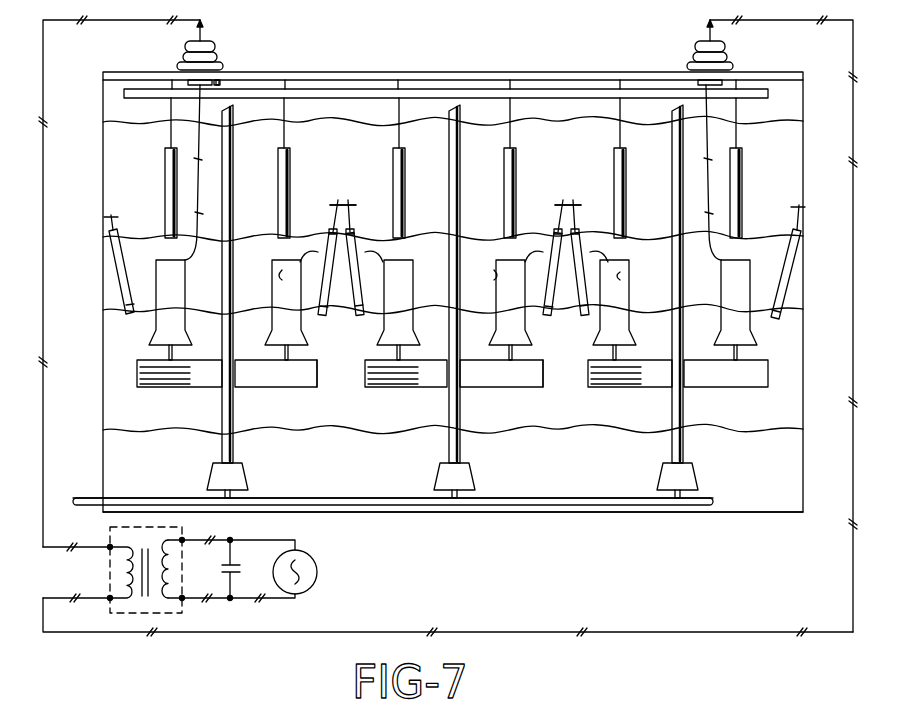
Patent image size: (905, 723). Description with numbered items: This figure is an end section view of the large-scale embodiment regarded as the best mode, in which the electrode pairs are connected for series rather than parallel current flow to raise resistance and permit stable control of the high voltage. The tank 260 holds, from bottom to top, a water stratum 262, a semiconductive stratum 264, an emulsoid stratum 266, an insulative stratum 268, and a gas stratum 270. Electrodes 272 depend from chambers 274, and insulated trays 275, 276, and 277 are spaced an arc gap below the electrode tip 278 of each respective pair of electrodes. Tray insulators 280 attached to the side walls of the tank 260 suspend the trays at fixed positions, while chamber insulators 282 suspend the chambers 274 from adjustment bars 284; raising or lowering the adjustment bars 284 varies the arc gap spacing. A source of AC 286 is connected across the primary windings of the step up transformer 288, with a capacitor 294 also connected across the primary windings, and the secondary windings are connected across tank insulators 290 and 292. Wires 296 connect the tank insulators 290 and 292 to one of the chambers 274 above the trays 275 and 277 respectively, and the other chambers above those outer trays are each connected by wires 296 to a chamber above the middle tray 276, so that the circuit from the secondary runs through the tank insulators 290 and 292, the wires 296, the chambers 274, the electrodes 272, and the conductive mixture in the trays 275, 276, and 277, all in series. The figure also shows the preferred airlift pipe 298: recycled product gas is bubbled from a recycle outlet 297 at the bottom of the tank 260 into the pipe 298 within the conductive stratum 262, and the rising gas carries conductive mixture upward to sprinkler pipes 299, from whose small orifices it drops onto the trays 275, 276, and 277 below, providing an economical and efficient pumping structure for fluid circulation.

The tank 260 is at (350, 72).
The water stratum 262 is at (114, 475).
The semiconductive stratum 264 is at (106, 403).
The emulsoid stratum 266 is at (106, 290).
The insulative stratum 268 is at (106, 167).
The gas stratum 270 is at (106, 97).
The electrodes 272 is at (143, 386).
The chambers 274 is at (283, 278).
The tray 275 is at (283, 386).
The tray 276 is at (508, 386).
The tray 277 is at (710, 373).
The electrode tip 278 is at (376, 388).
The tray insulators 280 is at (112, 234).
The chamber insulators 282 is at (364, 198).
The adjustment bars 284 is at (519, 92).
The source of AC 286 is at (312, 594).
The step up transformer 288 is at (110, 574).
The tank insulator 290 is at (211, 46).
The tank insulator 292 is at (702, 56).
The capacitor 294 is at (262, 562).
The wires 296 is at (177, 202).
The recycle outlet 297 is at (539, 506).
The airlift pipe 298 is at (276, 145).
The sprinkler pipes 299 is at (213, 264).